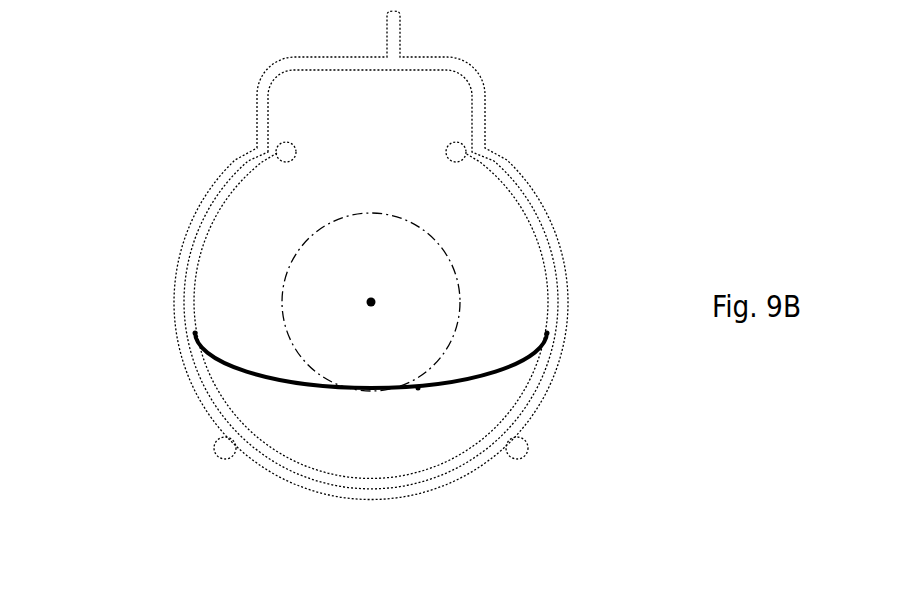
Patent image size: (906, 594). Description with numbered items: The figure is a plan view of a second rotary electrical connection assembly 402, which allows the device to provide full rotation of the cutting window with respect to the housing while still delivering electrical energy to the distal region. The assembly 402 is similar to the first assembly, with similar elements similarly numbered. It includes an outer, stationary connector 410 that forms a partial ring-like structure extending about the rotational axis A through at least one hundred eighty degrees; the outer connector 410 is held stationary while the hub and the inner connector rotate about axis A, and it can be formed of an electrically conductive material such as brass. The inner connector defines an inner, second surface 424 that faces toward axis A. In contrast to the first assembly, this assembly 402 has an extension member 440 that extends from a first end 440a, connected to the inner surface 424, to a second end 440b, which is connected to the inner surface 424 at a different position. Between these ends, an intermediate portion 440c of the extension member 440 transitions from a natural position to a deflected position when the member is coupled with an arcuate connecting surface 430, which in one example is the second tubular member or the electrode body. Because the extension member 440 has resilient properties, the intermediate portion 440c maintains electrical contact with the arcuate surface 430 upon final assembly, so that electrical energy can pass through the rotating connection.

The rotary electrical connection assembly 402 is at (70, 72).
The outer stationary connector 410 is at (512, 92).
The inner second surface 424 is at (337, 485).
The arcuate connecting surface 430 is at (451, 239).
The rotational axis A is at (371, 302).
The extension member 440 is at (487, 379).
The first end 440a is at (195, 333).
The second end 440b is at (547, 333).
The intermediate portion 440c is at (418, 388).